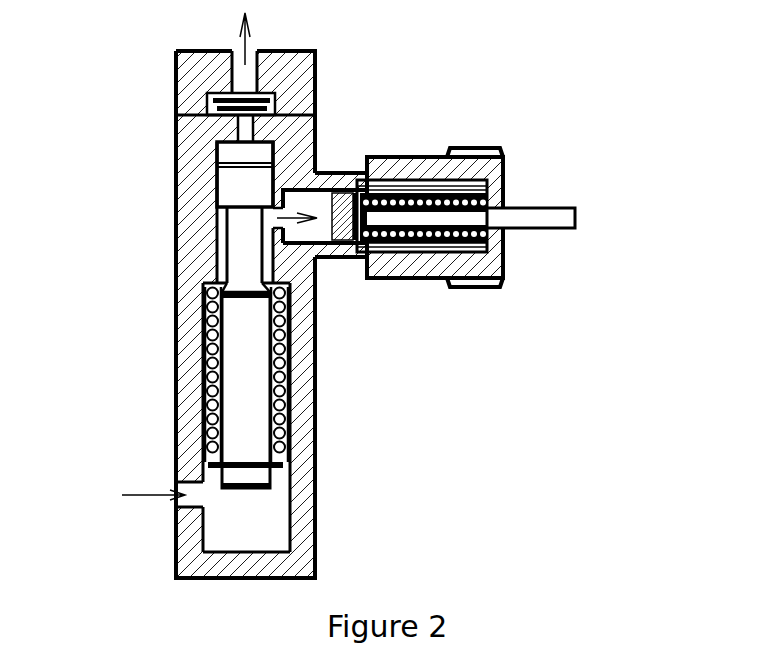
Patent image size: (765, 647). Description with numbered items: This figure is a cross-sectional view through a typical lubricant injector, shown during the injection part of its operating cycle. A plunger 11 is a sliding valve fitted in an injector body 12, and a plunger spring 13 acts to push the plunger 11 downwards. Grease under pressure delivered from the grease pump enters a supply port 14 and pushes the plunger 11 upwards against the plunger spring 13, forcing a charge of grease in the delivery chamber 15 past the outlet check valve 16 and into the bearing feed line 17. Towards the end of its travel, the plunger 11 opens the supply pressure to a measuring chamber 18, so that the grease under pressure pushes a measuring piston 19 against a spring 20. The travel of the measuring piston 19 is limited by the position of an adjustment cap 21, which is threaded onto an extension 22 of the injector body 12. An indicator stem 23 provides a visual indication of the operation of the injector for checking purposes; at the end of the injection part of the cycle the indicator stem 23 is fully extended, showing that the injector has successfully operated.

The plunger 11 is at (258, 358).
The injector body 12 is at (178, 267).
The plunger spring 13 is at (212, 390).
The supply port 14 is at (178, 503).
The delivery chamber 15 is at (228, 158).
The outlet check valve 16 is at (207, 96).
The bearing feed line 17 is at (257, 50).
The measuring chamber 18 is at (300, 205).
The measuring piston 19 is at (348, 197).
The spring 20 is at (492, 150).
The adjustment cap 21 is at (502, 280).
The extension 22 is at (347, 258).
The indicator stem 23 is at (548, 217).